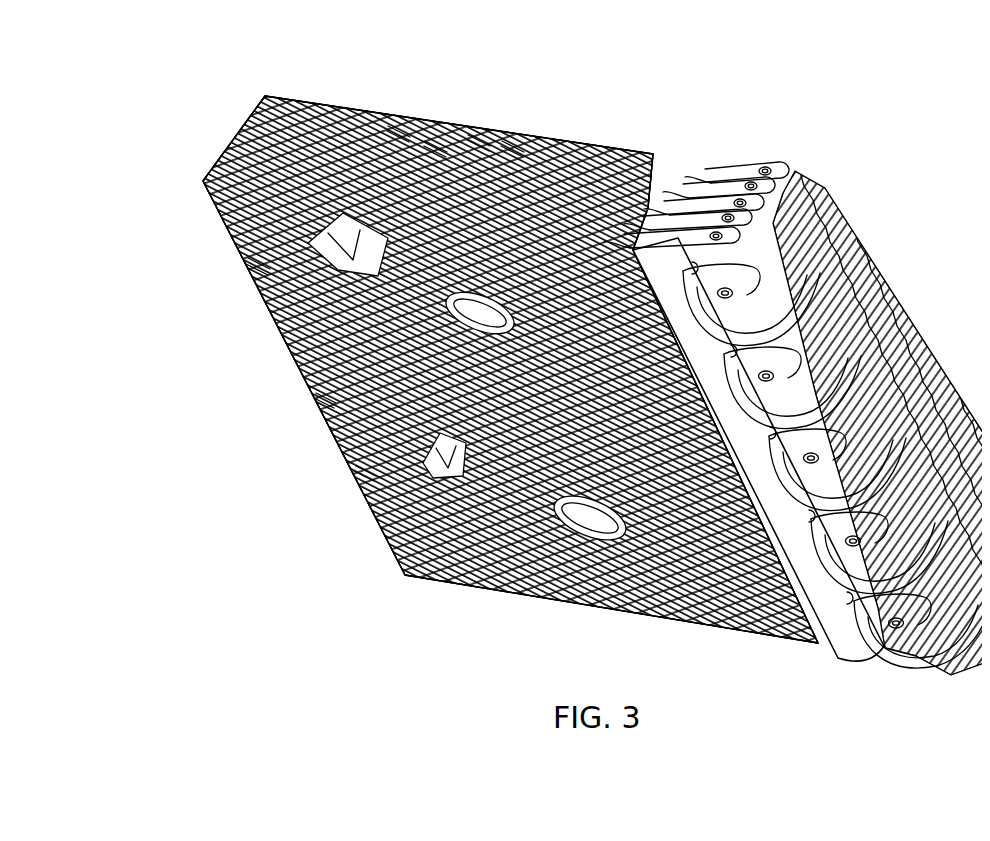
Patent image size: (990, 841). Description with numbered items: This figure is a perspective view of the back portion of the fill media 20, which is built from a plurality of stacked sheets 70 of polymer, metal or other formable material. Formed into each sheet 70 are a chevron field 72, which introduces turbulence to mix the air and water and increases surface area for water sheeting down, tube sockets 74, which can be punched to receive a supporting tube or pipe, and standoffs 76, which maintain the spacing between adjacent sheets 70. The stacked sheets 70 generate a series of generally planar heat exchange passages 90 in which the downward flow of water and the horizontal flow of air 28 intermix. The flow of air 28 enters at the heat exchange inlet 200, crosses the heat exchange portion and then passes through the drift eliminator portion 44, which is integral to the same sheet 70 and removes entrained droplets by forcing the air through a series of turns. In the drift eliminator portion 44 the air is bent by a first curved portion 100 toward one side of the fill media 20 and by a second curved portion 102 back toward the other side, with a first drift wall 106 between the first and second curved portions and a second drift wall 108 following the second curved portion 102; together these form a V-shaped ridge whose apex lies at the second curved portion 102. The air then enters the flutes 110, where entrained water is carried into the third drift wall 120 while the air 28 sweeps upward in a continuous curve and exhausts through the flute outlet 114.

The fill media 20 is at (579, 356).
The flow of air 28 is at (236, 340).
The drift eliminator portion 44 is at (793, 373).
The sheets 70 is at (470, 120).
The chevron field 72 is at (312, 388).
The tube sockets 74 is at (571, 545).
The standoffs 76 is at (352, 462).
The heat exchange passages 90 is at (391, 108).
The first curved portion 100 is at (697, 165).
The second curved portion 102 is at (704, 146).
The first drift wall 106 is at (680, 153).
The second drift wall 108 is at (731, 150).
The flute 110 is at (787, 162).
The flute outlet 114 is at (826, 182).
The third drift wall 120 is at (758, 157).
The heat exchange inlet 200 is at (238, 259).